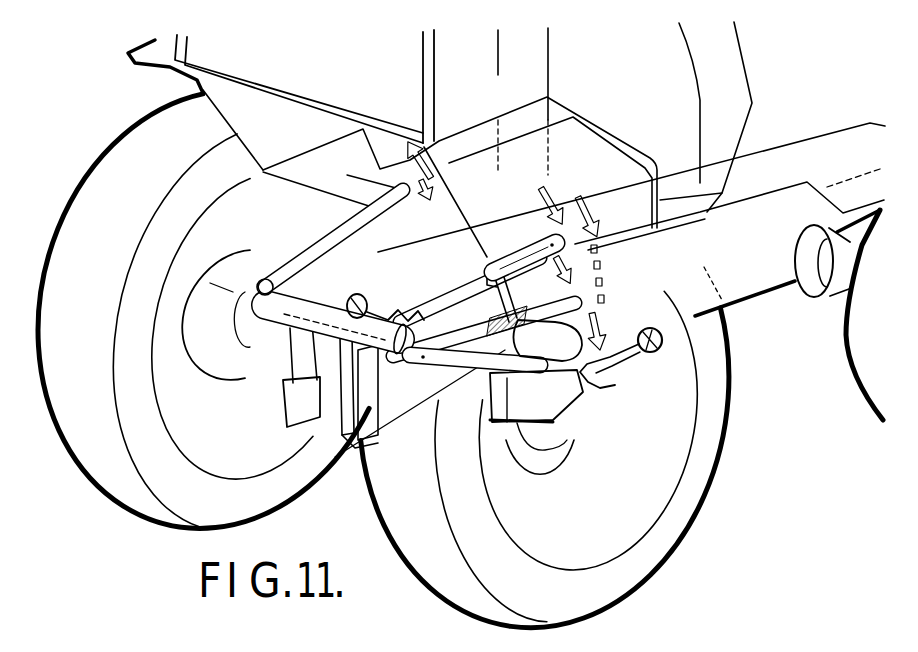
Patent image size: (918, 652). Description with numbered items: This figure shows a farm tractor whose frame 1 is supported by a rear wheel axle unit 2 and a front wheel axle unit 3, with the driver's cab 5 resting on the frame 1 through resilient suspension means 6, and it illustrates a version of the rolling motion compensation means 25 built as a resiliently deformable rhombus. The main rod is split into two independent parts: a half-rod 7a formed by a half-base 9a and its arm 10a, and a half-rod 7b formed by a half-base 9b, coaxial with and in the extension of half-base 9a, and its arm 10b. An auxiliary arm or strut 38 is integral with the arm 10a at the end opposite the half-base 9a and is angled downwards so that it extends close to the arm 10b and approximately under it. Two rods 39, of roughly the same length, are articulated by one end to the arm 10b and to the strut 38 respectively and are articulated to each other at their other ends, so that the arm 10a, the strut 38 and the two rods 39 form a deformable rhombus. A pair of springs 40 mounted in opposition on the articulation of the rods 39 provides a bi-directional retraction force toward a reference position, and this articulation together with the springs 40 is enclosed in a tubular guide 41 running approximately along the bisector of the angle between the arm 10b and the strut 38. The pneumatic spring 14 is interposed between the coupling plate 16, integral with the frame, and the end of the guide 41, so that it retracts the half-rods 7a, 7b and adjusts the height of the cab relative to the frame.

The frame 1 is at (758, 263).
The rear wheel axle unit 2 is at (689, 473).
The front wheel axle unit 3 is at (867, 360).
The driver's cab 5 is at (282, 90).
The resilient suspension means 6 is at (335, 352).
The half-rod 7a is at (270, 268).
The half-rod 7b is at (468, 280).
The half-base 9a is at (258, 305).
The half-base 9b is at (410, 396).
The arm 10a is at (312, 252).
The arm 10b is at (526, 250).
The pneumatic spring 14 is at (600, 377).
The coupling plate 16 is at (507, 400).
The rolling motion compensation means 25 is at (487, 257).
The auxiliary arm or strut 38 is at (475, 387).
The rods 39 is at (500, 356).
The springs 40 is at (438, 302).
The tubular guide 41 is at (605, 305).